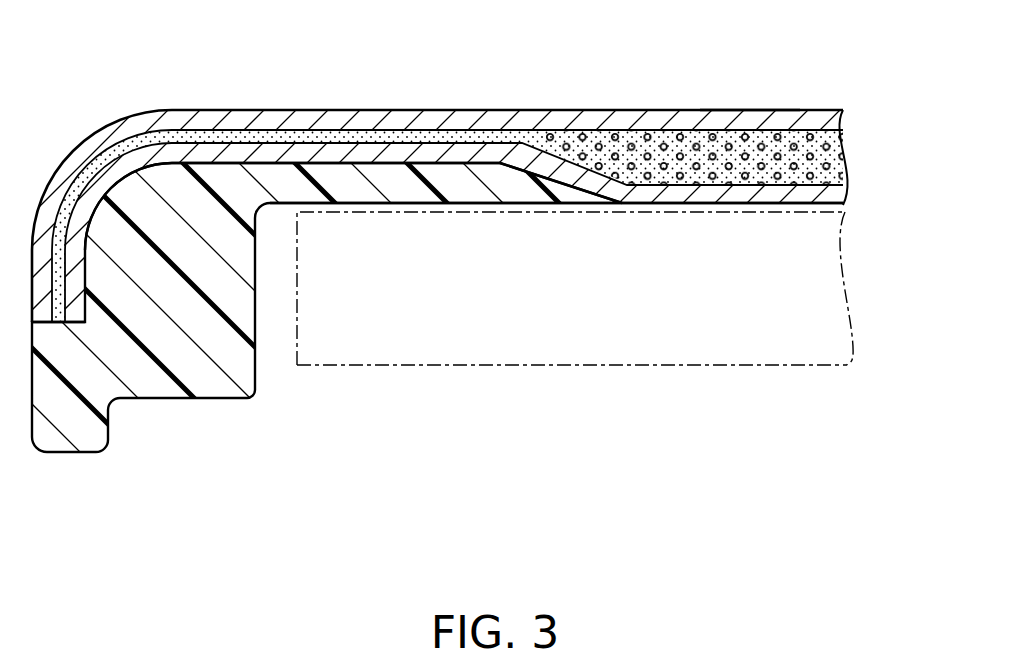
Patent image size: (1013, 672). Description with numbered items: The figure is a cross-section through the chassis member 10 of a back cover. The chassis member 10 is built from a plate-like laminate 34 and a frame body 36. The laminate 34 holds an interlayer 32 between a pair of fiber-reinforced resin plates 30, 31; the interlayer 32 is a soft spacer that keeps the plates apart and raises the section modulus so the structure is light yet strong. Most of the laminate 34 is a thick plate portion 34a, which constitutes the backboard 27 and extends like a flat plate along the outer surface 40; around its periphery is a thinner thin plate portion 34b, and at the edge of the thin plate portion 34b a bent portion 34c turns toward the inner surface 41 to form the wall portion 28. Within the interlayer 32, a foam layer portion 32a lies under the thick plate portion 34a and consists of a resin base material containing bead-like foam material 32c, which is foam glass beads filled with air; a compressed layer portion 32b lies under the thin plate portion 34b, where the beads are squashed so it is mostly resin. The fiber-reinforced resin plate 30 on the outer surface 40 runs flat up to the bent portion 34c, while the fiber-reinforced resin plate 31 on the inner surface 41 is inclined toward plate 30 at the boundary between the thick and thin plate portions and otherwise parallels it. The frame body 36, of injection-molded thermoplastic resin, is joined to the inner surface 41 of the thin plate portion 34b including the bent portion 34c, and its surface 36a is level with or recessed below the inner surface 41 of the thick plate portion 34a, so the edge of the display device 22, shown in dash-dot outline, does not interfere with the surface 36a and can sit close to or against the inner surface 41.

The chassis member 10 is at (45, 44).
The display device 22 is at (617, 368).
The backboard 27 is at (754, 106).
The wall portion 28 is at (43, 333).
The fiber-reinforced resin plate 30 is at (832, 118).
The fiber-reinforced resin plate 31 is at (832, 193).
The interlayer 32 is at (475, 187).
The foam layer portion 32a is at (698, 137).
The compressed layer portion 32b is at (305, 137).
The foam material 32c is at (633, 144).
The laminate 34 is at (506, 286).
The thick plate portion 34a is at (751, 214).
The thin plate portion 34b is at (428, 175).
The bent portion 34c is at (82, 143).
The frame body 36 is at (183, 405).
The surface 36a is at (503, 205).
The outer surface 40 is at (527, 110).
The inner surface 41 is at (363, 164).